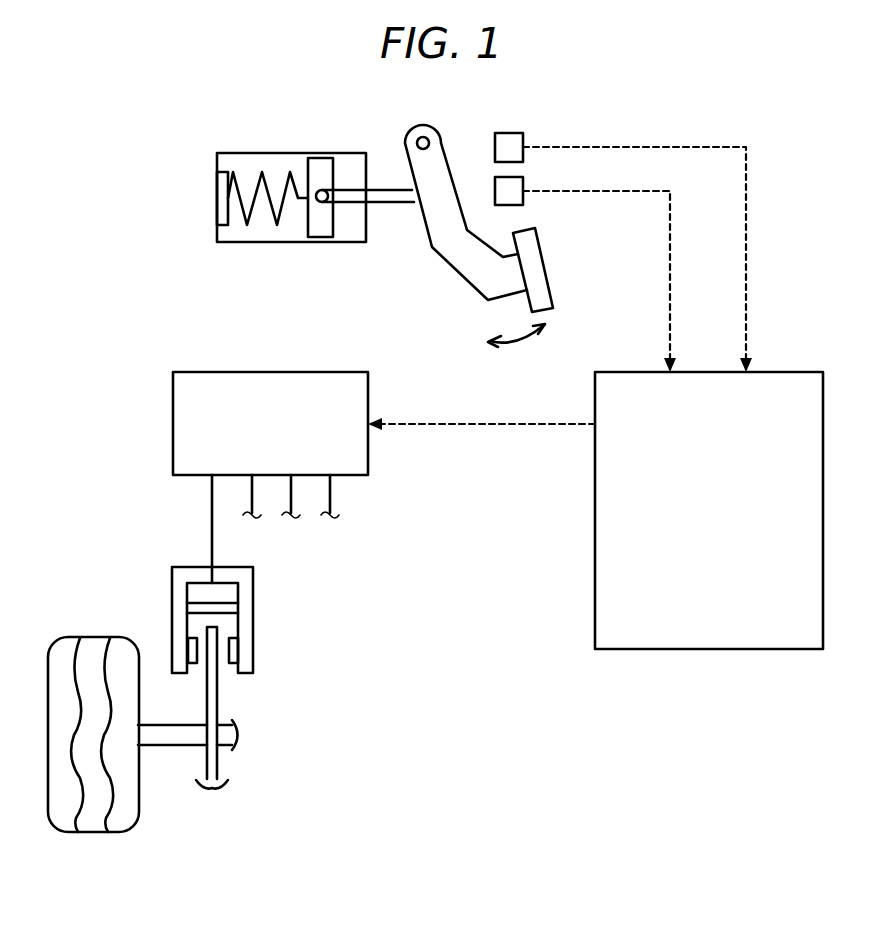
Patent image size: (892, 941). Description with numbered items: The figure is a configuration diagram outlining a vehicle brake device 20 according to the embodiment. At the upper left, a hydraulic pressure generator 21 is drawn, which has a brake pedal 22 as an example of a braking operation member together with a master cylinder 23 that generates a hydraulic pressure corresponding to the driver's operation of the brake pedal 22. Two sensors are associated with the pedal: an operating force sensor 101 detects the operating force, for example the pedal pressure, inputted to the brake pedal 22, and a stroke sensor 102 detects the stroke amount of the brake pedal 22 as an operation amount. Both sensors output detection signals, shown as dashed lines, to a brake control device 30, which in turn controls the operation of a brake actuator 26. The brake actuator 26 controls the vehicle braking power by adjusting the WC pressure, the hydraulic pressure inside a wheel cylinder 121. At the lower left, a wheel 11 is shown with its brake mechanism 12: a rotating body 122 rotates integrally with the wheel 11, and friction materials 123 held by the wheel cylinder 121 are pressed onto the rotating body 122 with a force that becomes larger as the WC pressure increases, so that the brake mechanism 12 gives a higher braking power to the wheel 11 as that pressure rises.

The brake device 20 is at (135, 253).
The hydraulic pressure generator 21 is at (314, 156).
The brake pedal 22 is at (545, 264).
The master cylinder 23 is at (311, 169).
The brake actuator 26 is at (270, 372).
The brake control device 30 is at (787, 372).
The operating force sensor 101 is at (509, 133).
The stroke sensor 102 is at (523, 180).
The wheel 11 is at (92, 833).
The brake mechanism 12 is at (212, 644).
The wheel cylinder 121 is at (238, 592).
The rotating body 122 is at (268, 754).
The friction materials 123 is at (233, 640).